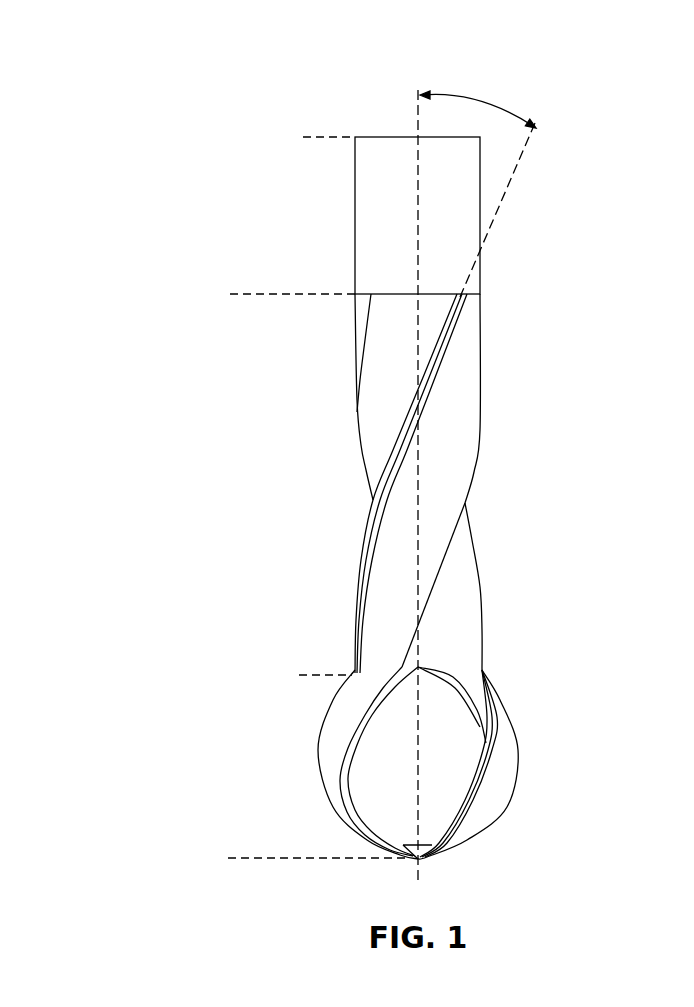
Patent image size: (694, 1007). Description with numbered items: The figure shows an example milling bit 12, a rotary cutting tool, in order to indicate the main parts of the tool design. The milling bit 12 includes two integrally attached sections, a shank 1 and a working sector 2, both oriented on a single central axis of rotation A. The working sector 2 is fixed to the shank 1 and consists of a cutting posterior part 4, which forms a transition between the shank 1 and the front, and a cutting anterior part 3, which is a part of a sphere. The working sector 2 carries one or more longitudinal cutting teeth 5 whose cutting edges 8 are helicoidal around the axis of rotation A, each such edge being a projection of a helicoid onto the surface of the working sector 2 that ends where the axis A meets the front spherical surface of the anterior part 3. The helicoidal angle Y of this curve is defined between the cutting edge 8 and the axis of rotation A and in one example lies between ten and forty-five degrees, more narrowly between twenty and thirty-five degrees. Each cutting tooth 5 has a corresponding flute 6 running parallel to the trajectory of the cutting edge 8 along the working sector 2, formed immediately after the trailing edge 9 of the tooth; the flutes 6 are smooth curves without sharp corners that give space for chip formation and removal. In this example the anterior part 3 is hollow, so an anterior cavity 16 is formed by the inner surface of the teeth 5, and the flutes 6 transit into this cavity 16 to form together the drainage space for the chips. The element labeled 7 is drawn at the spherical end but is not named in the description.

The shank 1 is at (303, 137).
The working sector 2 is at (230, 294).
The anterior part 3 is at (299, 675).
The posterior part 4 is at (299, 294).
The cutting tooth 5 is at (440, 443).
The flute 6 is at (463, 598).
The ball end cutting edge 7 is at (495, 790).
The cutting edge 8 is at (487, 748).
The trailing edge 9 is at (473, 460).
The milling bit 12 is at (527, 205).
The anterior cavity 16 is at (381, 758).
The axis of rotation A is at (417, 126).
The helicoidal angle Y is at (483, 92).